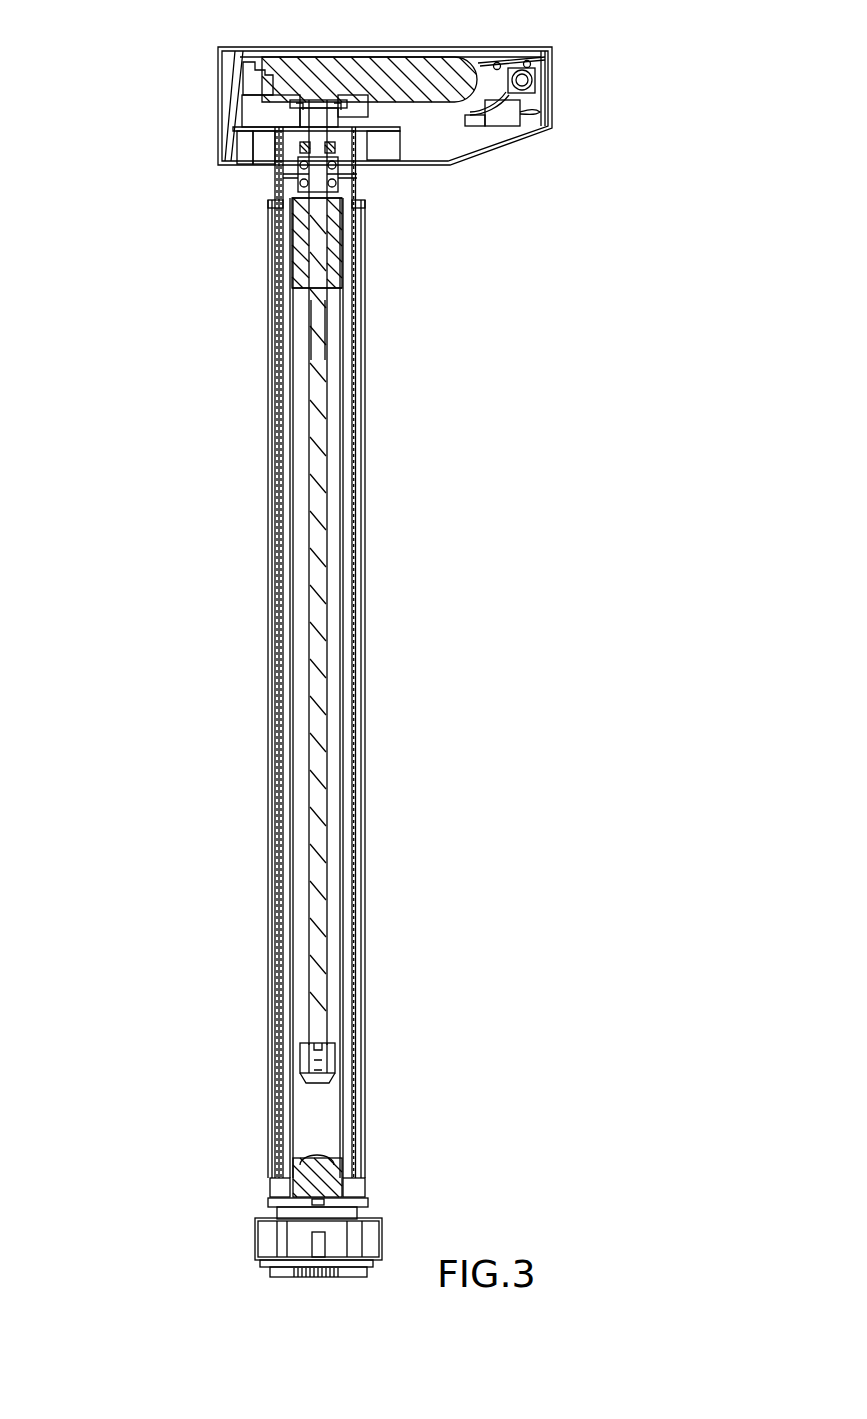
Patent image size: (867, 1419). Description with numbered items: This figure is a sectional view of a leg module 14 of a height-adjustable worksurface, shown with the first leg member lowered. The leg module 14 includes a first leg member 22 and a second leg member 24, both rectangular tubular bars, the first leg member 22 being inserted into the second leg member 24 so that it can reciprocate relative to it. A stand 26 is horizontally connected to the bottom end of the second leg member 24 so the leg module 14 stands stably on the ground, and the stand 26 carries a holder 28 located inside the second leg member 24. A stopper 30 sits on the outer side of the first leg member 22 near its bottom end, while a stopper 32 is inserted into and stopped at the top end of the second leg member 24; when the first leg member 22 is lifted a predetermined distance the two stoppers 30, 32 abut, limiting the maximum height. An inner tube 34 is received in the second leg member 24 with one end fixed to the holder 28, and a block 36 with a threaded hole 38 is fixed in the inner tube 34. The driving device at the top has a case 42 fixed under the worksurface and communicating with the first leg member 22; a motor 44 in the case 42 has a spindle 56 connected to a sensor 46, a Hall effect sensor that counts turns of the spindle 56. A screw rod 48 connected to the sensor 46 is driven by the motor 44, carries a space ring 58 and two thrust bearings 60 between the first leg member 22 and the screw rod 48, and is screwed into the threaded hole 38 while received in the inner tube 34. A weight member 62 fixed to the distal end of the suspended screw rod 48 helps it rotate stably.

The leg module 14 is at (578, 109).
The first leg member 22 is at (277, 570).
The second leg member 24 is at (272, 715).
The stand 26 is at (262, 1232).
The holder 28 is at (322, 1160).
The stopper 30 is at (272, 1128).
The stopper 32 is at (366, 213).
The inner tube 34 is at (345, 645).
The block 36 is at (350, 258).
The threaded hole 38 is at (300, 262).
The case 42 is at (218, 62).
The motor 44 is at (380, 63).
The sensor 46 is at (395, 128).
The screw rod 48 is at (320, 327).
The spindle 56 is at (298, 103).
The space ring 58 is at (298, 143).
The thrust bearings 60 is at (290, 143).
The weight member 62 is at (330, 1052).